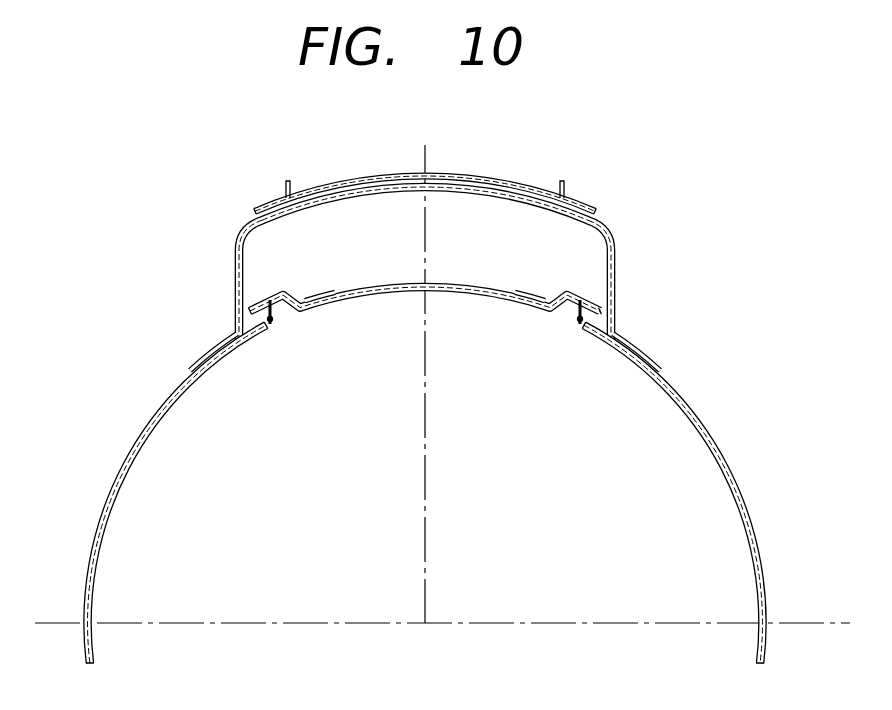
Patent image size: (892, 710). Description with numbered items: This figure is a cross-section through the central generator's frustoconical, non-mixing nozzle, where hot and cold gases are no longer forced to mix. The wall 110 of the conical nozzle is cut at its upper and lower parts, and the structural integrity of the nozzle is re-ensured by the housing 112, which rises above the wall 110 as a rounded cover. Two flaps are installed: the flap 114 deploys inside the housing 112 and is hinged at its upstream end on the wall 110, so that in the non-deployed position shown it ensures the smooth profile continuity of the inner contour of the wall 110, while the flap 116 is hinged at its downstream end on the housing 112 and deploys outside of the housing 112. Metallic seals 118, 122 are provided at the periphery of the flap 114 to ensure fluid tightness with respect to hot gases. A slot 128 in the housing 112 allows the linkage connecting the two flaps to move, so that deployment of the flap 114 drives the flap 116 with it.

The wall 110 is at (132, 472).
The housing 112 is at (617, 273).
The flap 114 is at (438, 291).
The flap 116 is at (456, 173).
The metallic seal 118 is at (269, 324).
The metallic seal 122 is at (575, 325).
The slot 128 is at (408, 198).